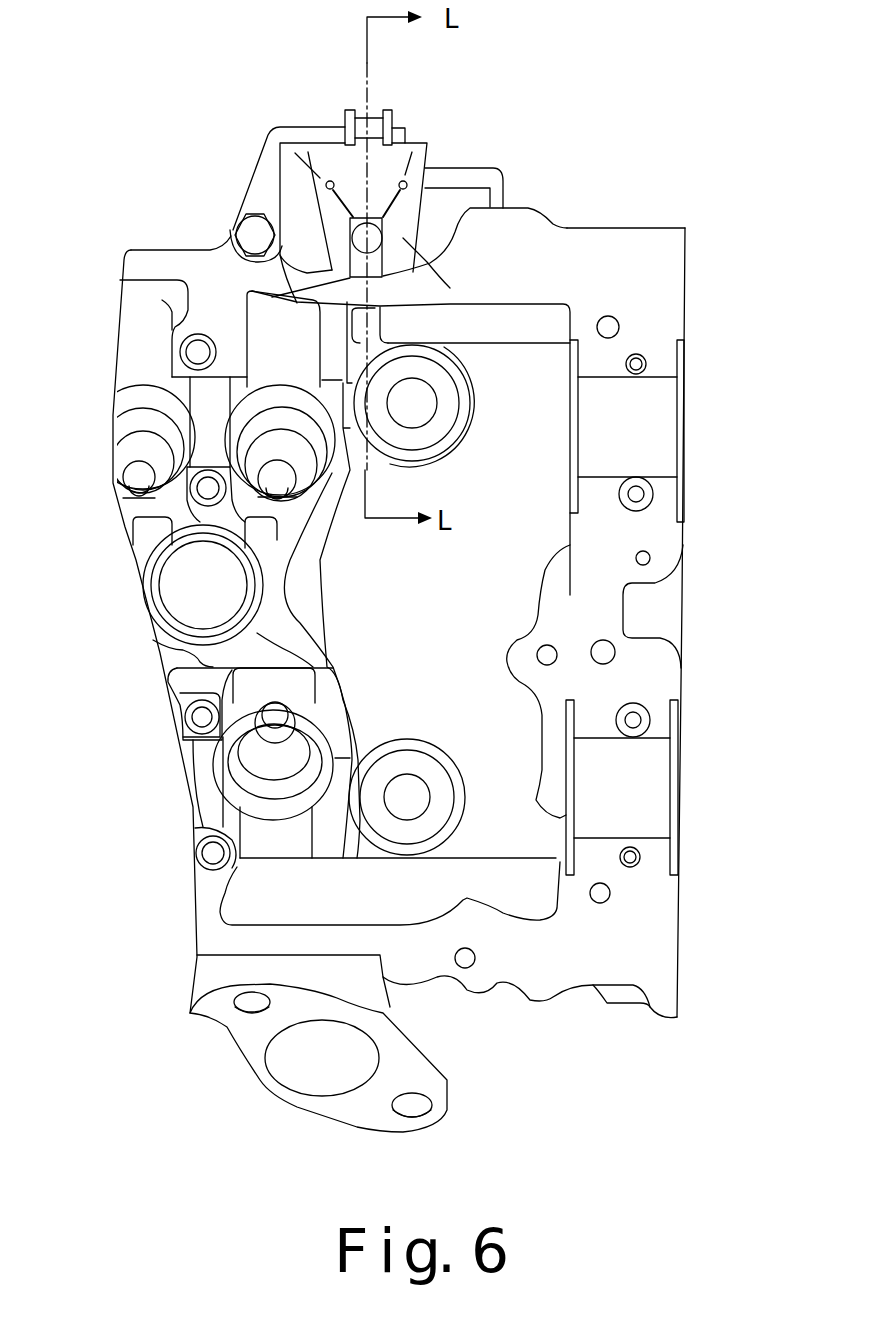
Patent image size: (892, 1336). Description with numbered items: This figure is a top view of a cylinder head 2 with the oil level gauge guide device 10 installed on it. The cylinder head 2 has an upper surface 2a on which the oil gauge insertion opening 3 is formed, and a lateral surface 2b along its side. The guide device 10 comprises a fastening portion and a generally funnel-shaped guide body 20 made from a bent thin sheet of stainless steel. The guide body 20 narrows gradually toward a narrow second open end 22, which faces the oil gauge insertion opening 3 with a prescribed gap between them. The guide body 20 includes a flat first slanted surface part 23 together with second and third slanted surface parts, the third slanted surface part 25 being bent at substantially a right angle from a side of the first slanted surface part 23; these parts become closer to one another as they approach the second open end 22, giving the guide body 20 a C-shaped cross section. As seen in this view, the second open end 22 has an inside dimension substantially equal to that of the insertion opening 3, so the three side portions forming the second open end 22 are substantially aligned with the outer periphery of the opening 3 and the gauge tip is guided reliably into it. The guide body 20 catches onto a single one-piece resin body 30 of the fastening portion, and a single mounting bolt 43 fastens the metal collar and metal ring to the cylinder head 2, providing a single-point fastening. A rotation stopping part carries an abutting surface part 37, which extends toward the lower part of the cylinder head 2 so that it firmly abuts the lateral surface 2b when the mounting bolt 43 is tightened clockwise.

The cylinder head 2 is at (692, 295).
The upper surface of the cylinder head 2a is at (628, 250).
The lateral surface of the cylinder head 2b is at (517, 204).
The oil gauge insertion opening 3 is at (357, 217).
The oil level gauge guide device 10 is at (250, 138).
The guide body 20 is at (440, 150).
The second open end 22 is at (310, 285).
The first slanted surface part 23 is at (410, 153).
The third slanted surface part 25 is at (441, 268).
The resin body 30 is at (273, 135).
The abutting surface part 37 is at (497, 212).
The mounting bolt 43 is at (247, 230).